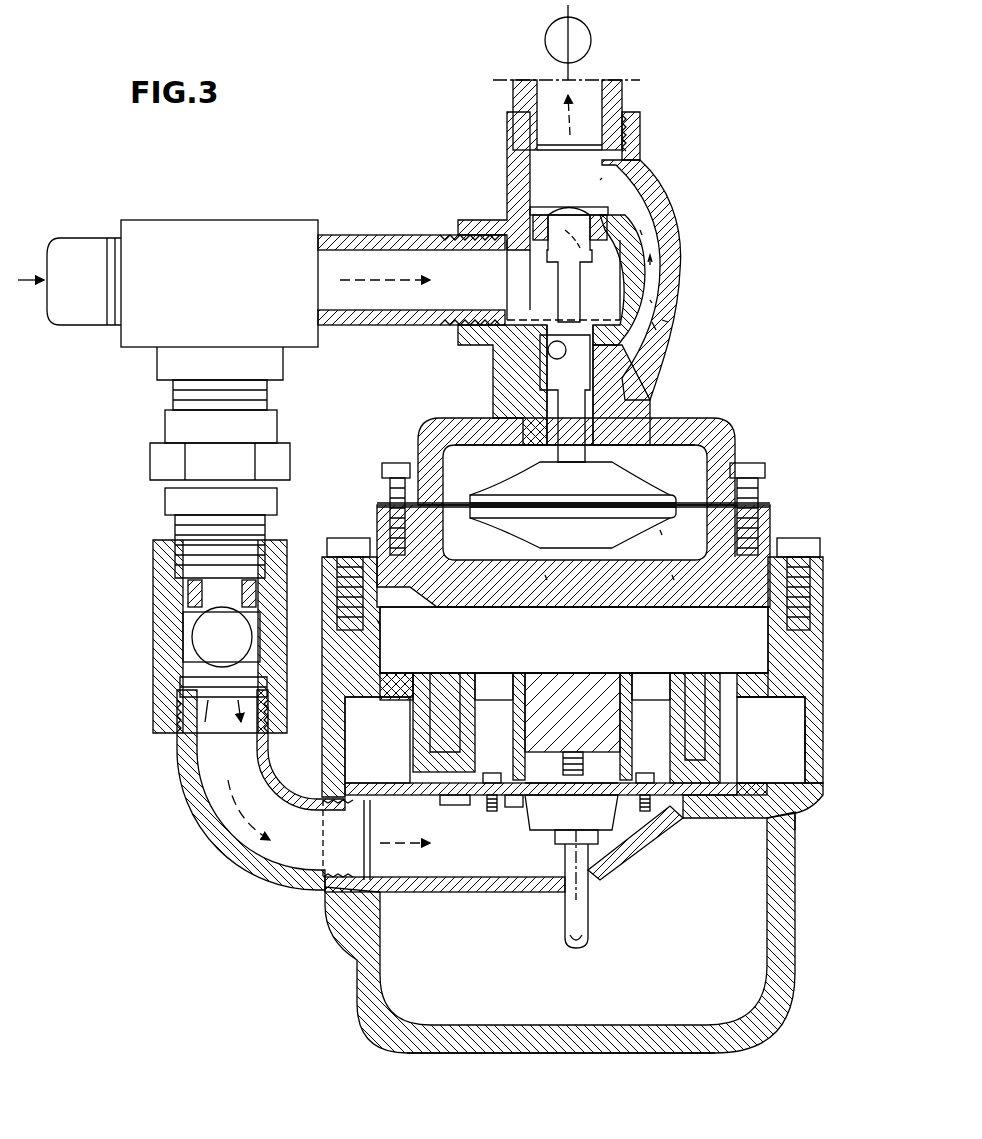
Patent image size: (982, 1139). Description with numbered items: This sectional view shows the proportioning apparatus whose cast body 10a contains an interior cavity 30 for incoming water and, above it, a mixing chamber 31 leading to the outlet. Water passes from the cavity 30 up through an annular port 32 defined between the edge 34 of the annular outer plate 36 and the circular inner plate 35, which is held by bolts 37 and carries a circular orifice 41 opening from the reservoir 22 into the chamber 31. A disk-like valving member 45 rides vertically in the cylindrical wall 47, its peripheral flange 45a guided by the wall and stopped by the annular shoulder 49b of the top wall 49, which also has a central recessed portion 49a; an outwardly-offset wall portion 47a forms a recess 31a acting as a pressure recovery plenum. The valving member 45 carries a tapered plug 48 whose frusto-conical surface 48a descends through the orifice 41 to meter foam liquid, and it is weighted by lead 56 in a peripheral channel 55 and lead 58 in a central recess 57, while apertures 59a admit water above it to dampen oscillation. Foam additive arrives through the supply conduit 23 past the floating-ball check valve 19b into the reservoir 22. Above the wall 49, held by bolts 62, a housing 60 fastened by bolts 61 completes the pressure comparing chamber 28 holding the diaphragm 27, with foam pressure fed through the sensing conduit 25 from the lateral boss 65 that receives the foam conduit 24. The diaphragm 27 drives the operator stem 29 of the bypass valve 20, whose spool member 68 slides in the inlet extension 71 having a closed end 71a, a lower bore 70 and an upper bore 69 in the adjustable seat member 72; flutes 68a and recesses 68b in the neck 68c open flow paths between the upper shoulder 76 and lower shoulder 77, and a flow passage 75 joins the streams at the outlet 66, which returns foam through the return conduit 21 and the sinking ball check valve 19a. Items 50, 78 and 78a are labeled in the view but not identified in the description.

The cast body 10a is at (660, 1055).
The sinking ball check valve 19a is at (591, 38).
The floating-ball check valve 19b is at (96, 669).
The bypass valve 20 is at (688, 265).
The foam liquid return conduit 21 is at (512, 88).
The reservoir 22 is at (668, 862).
The supply conduit 23 is at (250, 888).
The foam additive supply conduit 24 is at (116, 238).
The foam additive pressure-sensing conduit 25 is at (520, 348).
The diaphragm 27 is at (448, 508).
The pressure comparing chamber 28 is at (690, 445).
The operator stem 29 is at (580, 458).
The interior cavity 30 is at (433, 983).
The mixing chamber 31 is at (578, 637).
The recess 31a is at (818, 800).
The annular port 32 is at (455, 806).
The confronting edge 34 is at (445, 798).
The circular inner plate 35 is at (518, 808).
The annular outer plate 36 is at (398, 782).
The bolts 37 is at (492, 772).
The circular orifice 41 is at (550, 832).
The valving member 45 is at (416, 672).
The peripheral flange 45a is at (762, 690).
The cylindrical wall 47 is at (764, 630).
The outwardly-offset wall portion 47a is at (808, 735).
The tapered plug 48 is at (582, 817).
The frusto-conical peripheral surface 48a is at (668, 835).
The transverse wall 49 is at (672, 578).
The central recessed portion 49a is at (545, 580).
The annular peripheral shoulder 49b is at (372, 630).
The stem tip 50 is at (573, 945).
The peripheral channel 55 is at (735, 727).
The quantity of denser material 56 is at (450, 685).
The central recess 57 is at (620, 690).
The quantity of lead 58 is at (558, 700).
The apertures 59a is at (482, 705).
The housing 60 is at (630, 398).
The bolts 61 is at (392, 462).
The bolts 62 is at (346, 538).
The lateral boss 65 is at (480, 228).
The outlet 66 is at (633, 140).
The spool member 68 is at (582, 284).
The flutes 68a is at (650, 300).
The recesses 68b is at (565, 235).
The neck portion 68c is at (628, 255).
The upper bore 69 is at (610, 200).
The lower bore 70 is at (555, 365).
The inlet extension 71 is at (635, 262).
The closed end 71a is at (655, 322).
The seat member 72 is at (605, 215).
The flow passage 75 is at (668, 328).
The upper shoulder 76 is at (548, 268).
The lower shoulder 77 is at (562, 388).
The flange 78 is at (700, 533).
The flange portion 78a is at (670, 540).